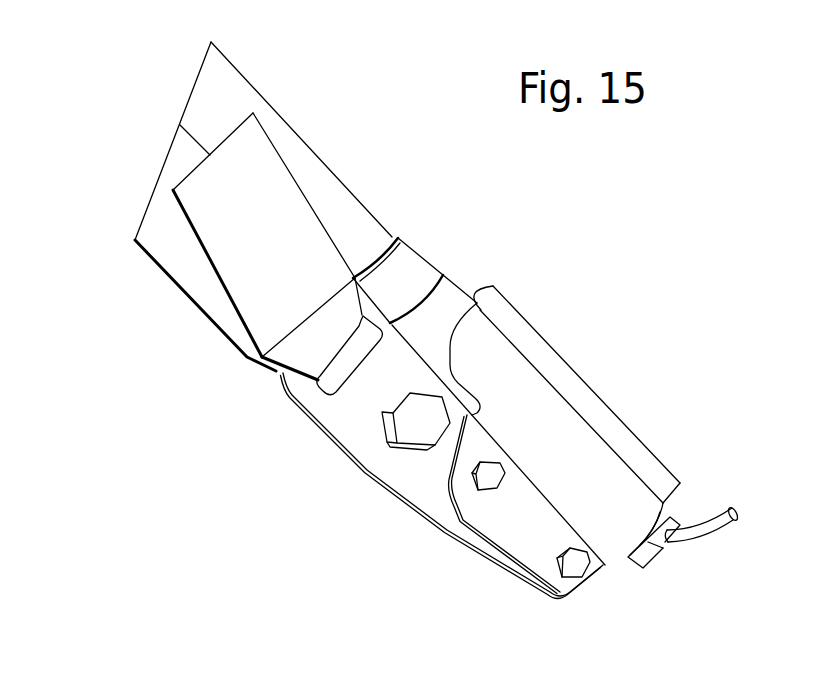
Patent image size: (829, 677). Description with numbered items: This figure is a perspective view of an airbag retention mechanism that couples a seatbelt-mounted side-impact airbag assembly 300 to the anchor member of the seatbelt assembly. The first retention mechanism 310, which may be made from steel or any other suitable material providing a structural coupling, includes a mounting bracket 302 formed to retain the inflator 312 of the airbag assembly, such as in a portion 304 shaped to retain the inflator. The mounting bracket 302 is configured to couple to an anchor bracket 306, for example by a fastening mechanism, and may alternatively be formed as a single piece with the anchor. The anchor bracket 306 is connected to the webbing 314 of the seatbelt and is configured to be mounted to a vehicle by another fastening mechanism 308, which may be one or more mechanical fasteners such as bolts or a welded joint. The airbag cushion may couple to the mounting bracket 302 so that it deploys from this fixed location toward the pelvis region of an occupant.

The airbag assembly 300 is at (302, 106).
The mounting bracket 302 is at (526, 516).
The portion shaped to retain the inflator 304 is at (615, 530).
The anchor bracket 306 is at (425, 472).
The fastening mechanism 308 is at (408, 428).
The first retention mechanism 310 is at (597, 344).
The inflator 312 is at (405, 272).
The webbing 314 is at (308, 355).